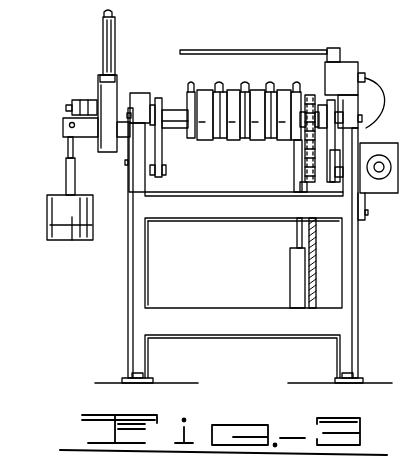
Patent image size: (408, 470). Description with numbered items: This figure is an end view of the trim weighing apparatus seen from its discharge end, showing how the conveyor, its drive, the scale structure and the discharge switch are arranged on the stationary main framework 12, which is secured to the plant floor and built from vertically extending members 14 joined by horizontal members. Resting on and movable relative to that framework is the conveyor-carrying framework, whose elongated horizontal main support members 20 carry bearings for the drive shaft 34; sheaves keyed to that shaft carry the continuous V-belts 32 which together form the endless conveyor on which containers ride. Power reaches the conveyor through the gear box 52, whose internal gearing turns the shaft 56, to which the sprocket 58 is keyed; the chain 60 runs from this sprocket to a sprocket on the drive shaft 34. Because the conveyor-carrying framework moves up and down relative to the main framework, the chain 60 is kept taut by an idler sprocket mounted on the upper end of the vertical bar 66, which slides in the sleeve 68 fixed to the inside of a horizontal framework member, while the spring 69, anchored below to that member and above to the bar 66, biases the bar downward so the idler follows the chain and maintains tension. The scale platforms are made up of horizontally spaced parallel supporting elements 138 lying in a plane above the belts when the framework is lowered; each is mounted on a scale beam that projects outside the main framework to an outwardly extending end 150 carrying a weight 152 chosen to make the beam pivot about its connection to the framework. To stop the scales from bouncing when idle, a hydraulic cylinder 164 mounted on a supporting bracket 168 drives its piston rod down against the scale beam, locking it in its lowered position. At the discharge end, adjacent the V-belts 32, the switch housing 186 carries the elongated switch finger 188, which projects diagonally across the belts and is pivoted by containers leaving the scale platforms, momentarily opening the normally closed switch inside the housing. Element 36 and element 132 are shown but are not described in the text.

The stationary main framework 12 is at (112, 260).
The vertically extending members 14 is at (130, 292).
The main support members 20 is at (140, 100).
The V-belts 32 is at (251, 114).
The drive shaft 34 is at (173, 113).
The bearing plate 36 is at (162, 147).
The gear box 52 is at (373, 143).
The shaft 56 is at (322, 179).
The sprocket 58 is at (307, 173).
The chain 60 is at (306, 157).
The bar 66 is at (297, 236).
The sleeve 68 is at (297, 280).
The spring 69 is at (315, 272).
The roller 132 is at (286, 92).
The supporting elements 138 is at (268, 82).
The outwardly extending end 150 is at (82, 122).
The weight 152 is at (60, 202).
The hydraulic cylinder 164 is at (105, 34).
The supporting bracket 168 is at (97, 90).
The switch housing 186 is at (350, 64).
The switch finger 188 is at (232, 50).